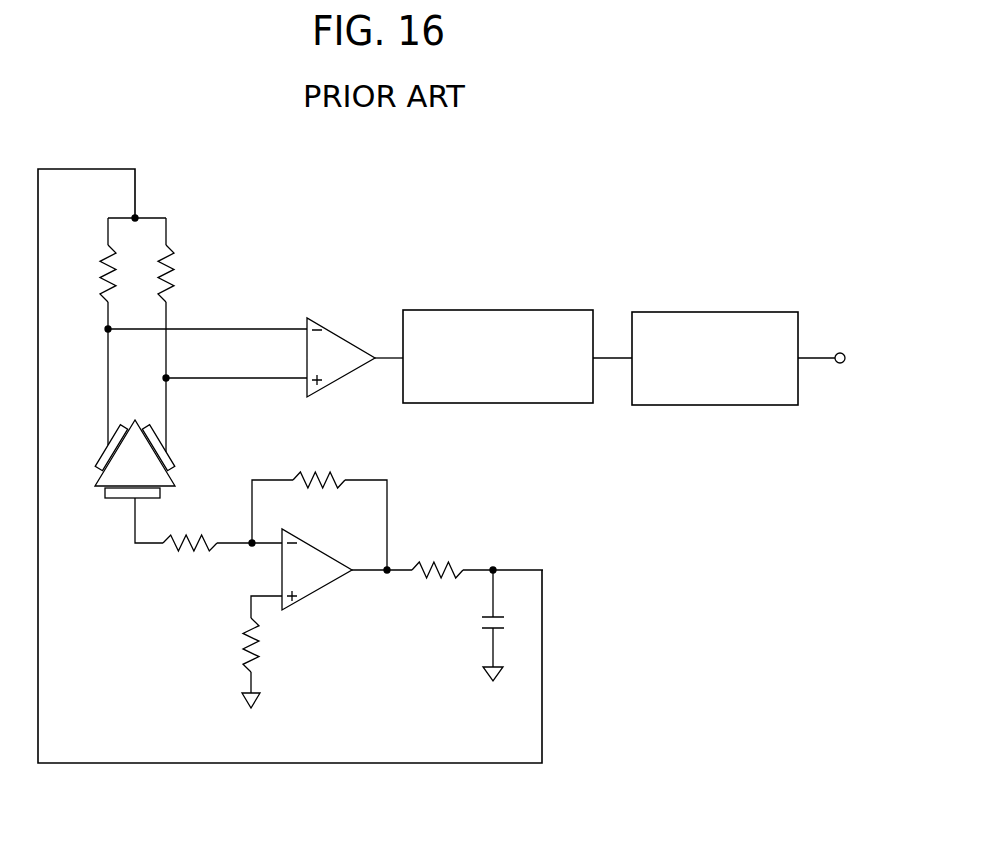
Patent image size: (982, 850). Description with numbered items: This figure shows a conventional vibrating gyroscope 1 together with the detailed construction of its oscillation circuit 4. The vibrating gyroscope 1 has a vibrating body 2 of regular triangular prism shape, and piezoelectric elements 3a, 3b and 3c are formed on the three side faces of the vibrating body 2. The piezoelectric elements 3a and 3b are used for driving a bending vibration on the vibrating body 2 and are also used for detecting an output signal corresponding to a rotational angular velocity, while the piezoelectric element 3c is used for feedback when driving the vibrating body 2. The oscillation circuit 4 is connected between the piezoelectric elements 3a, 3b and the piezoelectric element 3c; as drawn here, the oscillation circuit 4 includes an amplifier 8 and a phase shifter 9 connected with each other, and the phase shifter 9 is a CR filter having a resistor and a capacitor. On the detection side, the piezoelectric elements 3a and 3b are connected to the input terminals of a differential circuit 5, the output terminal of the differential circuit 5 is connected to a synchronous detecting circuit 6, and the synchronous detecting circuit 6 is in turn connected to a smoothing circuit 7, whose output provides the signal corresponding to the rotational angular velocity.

The vibrating gyroscope 1 is at (86, 88).
The vibrating body 2 is at (101, 481).
The piezoelectric element 3a is at (103, 456).
The piezoelectric element 3b is at (162, 458).
The piezoelectric element 3c is at (122, 500).
The oscillation circuit 4 is at (425, 504).
The differential circuit 5 is at (339, 345).
The synchronous detecting circuit 6 is at (492, 308).
The smoothing circuit 7 is at (652, 310).
The amplifier 8 is at (318, 576).
The phase shifter 9 is at (477, 551).